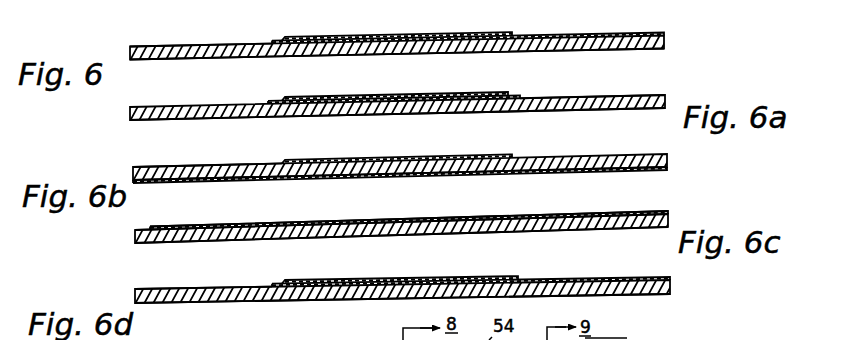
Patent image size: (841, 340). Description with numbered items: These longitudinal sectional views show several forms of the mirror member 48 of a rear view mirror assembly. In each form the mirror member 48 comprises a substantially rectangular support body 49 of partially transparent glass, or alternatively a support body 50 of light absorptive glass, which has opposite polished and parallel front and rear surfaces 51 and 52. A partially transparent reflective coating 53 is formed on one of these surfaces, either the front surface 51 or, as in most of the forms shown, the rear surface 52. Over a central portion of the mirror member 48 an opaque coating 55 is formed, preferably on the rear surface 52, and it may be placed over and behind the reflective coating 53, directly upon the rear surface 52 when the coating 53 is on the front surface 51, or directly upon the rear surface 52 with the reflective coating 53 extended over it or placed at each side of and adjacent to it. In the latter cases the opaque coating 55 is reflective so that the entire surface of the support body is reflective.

In FIG. 6, the mirror member 48 is at (665, 36).
In FIG. 6A, the mirror member 48 is at (128, 118).
In FIG. 6B, the mirror member 48 is at (669, 163).
In FIG. 6C, the mirror member 48 is at (133, 237).
In FIG. 6D, the mirror member 48 is at (672, 282).
In FIG. 6, the support body 49 is at (622, 41).
In FIG. 6B, the support body 49 is at (625, 160).
In FIG. 6C, the support body 49 is at (175, 241).
In FIG. 6D, the support body 49 is at (632, 290).
In FIG. 6A, the support body 50 is at (188, 118).
In FIG. 6, the front surface 51 is at (201, 60).
In FIG. 6A, the front surface 51 is at (535, 109).
In FIG. 6B, the front surface 51 is at (210, 181).
In FIG. 6C, the front surface 51 is at (542, 231).
In FIG. 6D, the front surface 51 is at (247, 301).
In FIG. 6, the rear surface 52 is at (218, 46).
In FIG. 6A, the rear surface 52 is at (548, 99).
In FIG. 6B, the rear surface 52 is at (227, 167).
In FIG. 6C, the rear surface 52 is at (561, 213).
In FIG. 6D, the rear surface 52 is at (236, 287).
In FIG. 6, the partially transparent reflective coating 53 is at (517, 32).
In FIG. 6A, the partially transparent reflective coating 53 is at (258, 106).
In FIG. 6B, the partially transparent reflective coating 53 is at (350, 177).
In FIG. 6C, the partially transparent reflective coating 53 is at (255, 224).
In FIG. 6D, the partially transparent reflective coating 53 is at (582, 278).
In FIG. 6, the opaque coating 55 is at (372, 38).
In FIG. 6A, the opaque coating 55 is at (400, 100).
In FIG. 6B, the opaque coating 55 is at (386, 159).
In FIG. 6C, the opaque coating 55 is at (415, 219).
In FIG. 6D, the opaque coating 55 is at (418, 277).